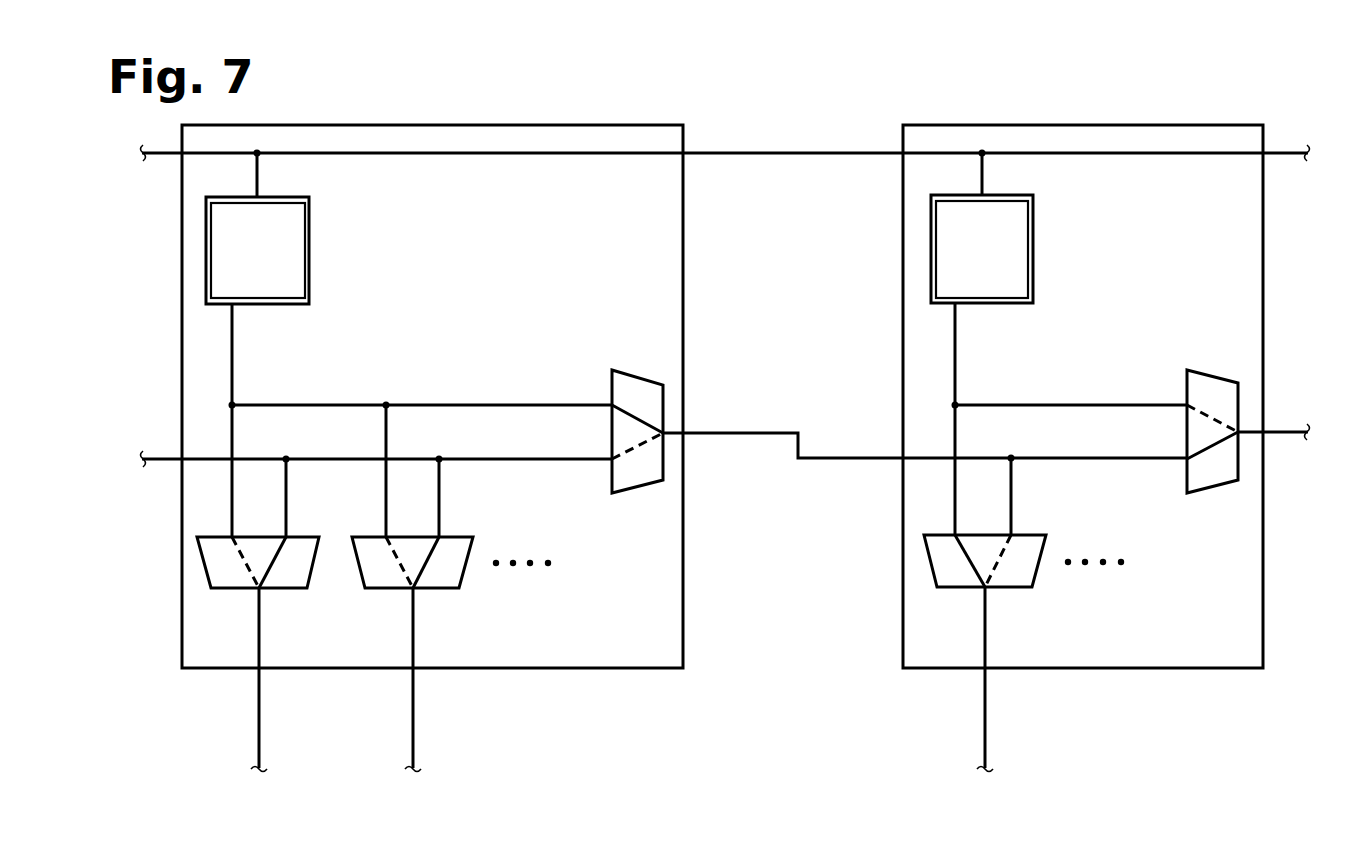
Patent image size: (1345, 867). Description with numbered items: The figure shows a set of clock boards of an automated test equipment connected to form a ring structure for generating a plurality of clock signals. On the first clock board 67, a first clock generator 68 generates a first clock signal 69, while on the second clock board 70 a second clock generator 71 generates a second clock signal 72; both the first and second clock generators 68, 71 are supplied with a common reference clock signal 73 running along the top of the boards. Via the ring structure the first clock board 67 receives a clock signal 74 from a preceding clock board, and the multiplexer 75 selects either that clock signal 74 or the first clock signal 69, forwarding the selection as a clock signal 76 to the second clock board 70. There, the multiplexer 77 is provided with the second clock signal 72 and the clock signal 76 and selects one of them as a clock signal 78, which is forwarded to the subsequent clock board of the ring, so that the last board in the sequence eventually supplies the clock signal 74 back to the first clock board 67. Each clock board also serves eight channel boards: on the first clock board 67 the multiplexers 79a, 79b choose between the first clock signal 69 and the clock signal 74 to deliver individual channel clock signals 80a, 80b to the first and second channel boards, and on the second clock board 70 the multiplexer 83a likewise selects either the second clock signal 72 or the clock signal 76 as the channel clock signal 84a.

The first clock board 67 is at (645, 643).
The first clock generator 68 is at (283, 242).
The first clock signal 69 is at (232, 352).
The second clock board 70 is at (1222, 642).
The second clock generator 71 is at (1007, 238).
The second clock signal 72 is at (955, 348).
The reference clock signal 73 is at (257, 173).
The clock signal from preceding clock board 74 is at (152, 458).
The multiplexer 75 is at (635, 370).
The clock signal 76 is at (777, 433).
The multiplexer 77 is at (1210, 372).
The clock signal 78 is at (1310, 440).
The multiplexer 79a is at (288, 588).
The multiplexer 79b is at (445, 588).
The channel clock signal 80a is at (259, 730).
The channel clock signal 80b is at (413, 730).
The multiplexer 83a is at (1018, 587).
The channel clock signal 84a is at (985, 730).